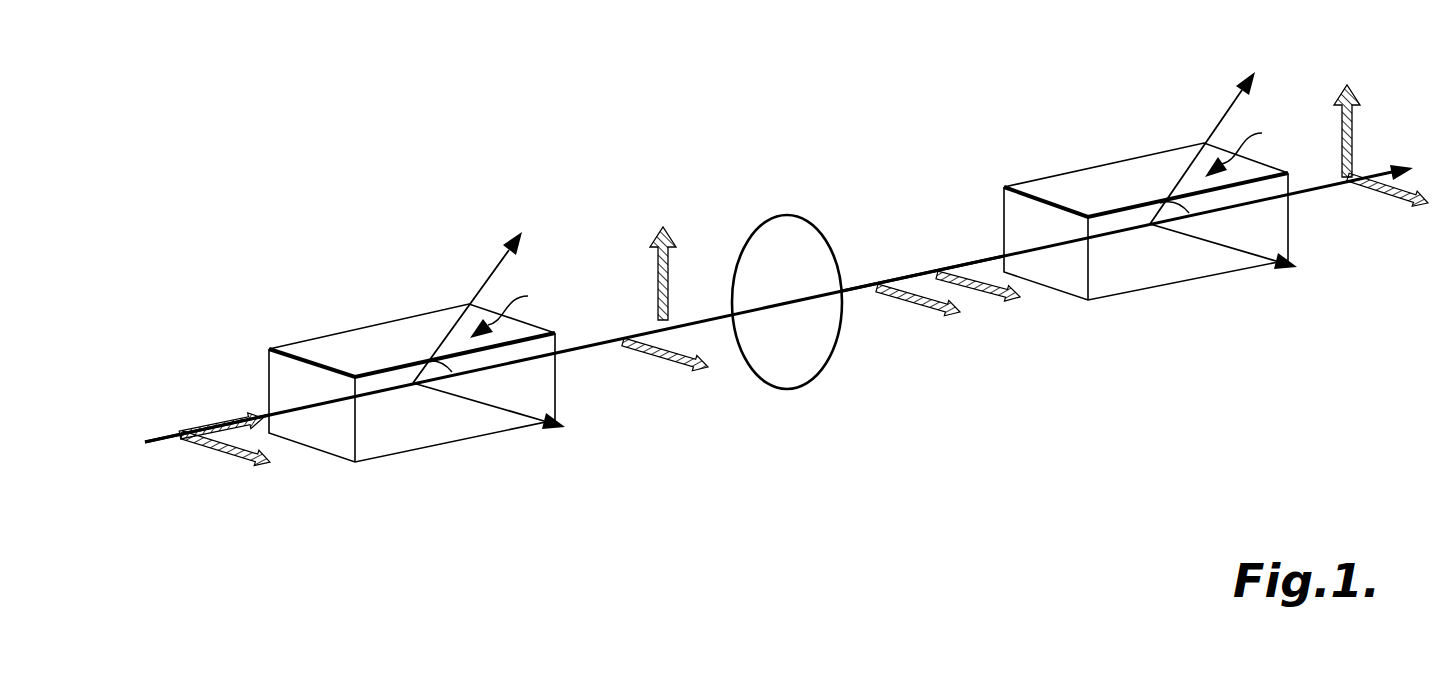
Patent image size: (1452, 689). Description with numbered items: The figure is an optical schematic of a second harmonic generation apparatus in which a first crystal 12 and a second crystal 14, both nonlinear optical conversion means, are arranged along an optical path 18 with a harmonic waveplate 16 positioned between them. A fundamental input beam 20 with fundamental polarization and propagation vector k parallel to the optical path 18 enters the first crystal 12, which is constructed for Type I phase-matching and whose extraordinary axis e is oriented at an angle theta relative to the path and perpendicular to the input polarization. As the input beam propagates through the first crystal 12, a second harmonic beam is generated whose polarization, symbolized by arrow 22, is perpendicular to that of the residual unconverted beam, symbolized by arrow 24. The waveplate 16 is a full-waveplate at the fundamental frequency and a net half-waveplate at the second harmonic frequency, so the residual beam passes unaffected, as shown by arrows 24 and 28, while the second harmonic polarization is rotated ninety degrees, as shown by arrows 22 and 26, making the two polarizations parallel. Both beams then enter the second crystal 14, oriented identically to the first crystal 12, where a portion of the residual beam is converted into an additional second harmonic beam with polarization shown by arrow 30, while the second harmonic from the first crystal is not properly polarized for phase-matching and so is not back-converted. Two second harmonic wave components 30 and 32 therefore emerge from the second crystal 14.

The first crystal 12 is at (388, 340).
The second crystal 14 is at (1122, 180).
The harmonic waveplate 16 is at (827, 360).
The optical path 18 is at (970, 258).
The fundamental input beam 20 is at (150, 433).
The second harmonic beam polarization arrow 22 is at (655, 285).
The residual beam polarization arrow 24 is at (650, 357).
The rotated second harmonic polarization arrow 26 is at (1003, 278).
The residual beam polarization arrow after waveplate 28 is at (920, 307).
The additional second harmonic wave component 30 is at (1353, 153).
The second harmonic wave component 32 is at (1380, 195).